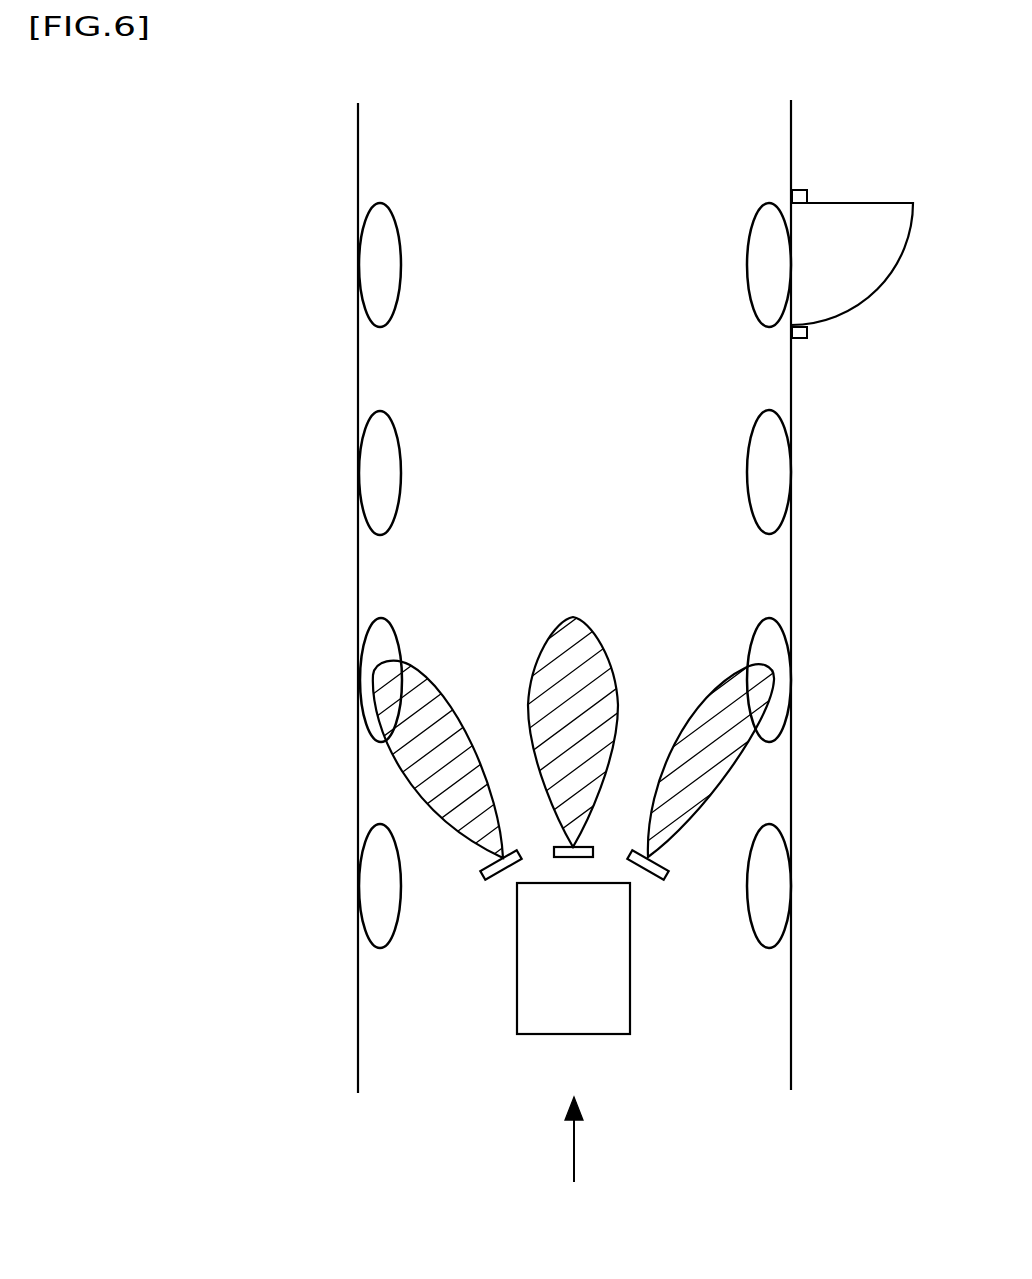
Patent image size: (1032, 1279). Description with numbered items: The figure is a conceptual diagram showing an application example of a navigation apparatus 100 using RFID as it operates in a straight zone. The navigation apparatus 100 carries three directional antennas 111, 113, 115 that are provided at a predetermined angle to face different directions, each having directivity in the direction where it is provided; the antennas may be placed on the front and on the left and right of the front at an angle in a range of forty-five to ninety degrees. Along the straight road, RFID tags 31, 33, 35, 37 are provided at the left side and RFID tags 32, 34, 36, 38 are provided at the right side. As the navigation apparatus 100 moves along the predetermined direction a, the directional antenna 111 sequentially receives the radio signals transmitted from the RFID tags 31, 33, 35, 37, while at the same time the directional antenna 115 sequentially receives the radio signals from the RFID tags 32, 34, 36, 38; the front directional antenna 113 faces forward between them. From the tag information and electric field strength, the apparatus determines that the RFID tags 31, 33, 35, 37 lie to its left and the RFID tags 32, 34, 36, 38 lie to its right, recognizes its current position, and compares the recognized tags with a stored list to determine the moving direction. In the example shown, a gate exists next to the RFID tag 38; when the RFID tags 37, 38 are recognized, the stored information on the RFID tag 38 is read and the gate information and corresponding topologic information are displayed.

The RFID tag 31 is at (362, 886).
The RFID tag 32 is at (790, 890).
The RFID tag 33 is at (360, 680).
The RFID tag 34 is at (790, 682).
The RFID tag 35 is at (360, 476).
The RFID tag 36 is at (786, 470).
The RFID tag 37 is at (360, 268).
The RFID tag 38 is at (768, 203).
The navigation apparatus 100 is at (643, 1005).
The directional antenna 111 is at (488, 873).
The directional antenna 113 is at (580, 847).
The directional antenna 115 is at (666, 878).
The predetermined direction a is at (583, 1139).